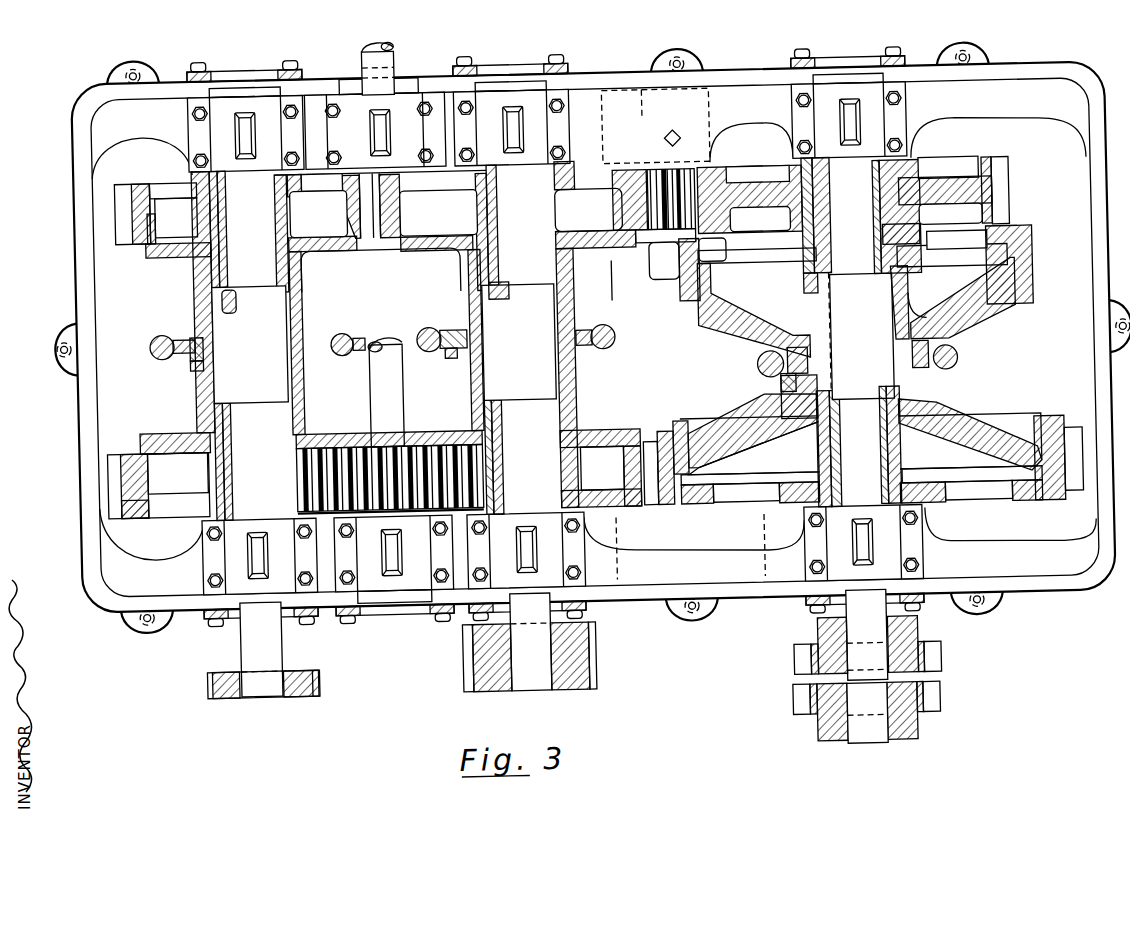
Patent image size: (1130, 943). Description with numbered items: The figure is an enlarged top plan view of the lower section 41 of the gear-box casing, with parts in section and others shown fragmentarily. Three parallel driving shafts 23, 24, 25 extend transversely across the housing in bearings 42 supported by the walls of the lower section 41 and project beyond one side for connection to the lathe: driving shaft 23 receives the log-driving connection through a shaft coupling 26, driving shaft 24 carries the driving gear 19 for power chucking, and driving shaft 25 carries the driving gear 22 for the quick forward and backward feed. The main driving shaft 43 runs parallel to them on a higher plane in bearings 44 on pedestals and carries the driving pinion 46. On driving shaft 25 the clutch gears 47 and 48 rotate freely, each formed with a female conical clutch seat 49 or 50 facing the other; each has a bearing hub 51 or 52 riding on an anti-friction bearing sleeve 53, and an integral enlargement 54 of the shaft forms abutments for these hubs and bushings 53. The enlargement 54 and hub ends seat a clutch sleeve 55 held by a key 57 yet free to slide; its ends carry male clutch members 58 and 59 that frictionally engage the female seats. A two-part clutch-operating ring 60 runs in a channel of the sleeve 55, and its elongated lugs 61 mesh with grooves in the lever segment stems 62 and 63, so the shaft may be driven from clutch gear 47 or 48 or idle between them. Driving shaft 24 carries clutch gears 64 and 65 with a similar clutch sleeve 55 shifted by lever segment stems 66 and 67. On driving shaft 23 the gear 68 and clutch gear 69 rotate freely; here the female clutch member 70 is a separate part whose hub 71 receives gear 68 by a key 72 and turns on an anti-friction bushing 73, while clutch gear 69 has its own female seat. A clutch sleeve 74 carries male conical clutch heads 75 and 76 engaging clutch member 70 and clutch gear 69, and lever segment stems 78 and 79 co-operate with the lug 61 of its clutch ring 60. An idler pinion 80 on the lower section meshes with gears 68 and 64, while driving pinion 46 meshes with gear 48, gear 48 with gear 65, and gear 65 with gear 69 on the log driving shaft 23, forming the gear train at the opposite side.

The driving gear 19 is at (582, 660).
The driving gear 22 is at (310, 681).
The driving shaft 23 is at (867, 634).
The driving shaft 24 is at (531, 642).
The driving shaft 25 is at (238, 651).
The shaft coupling 26 is at (788, 692).
The lower section 41 is at (90, 304).
The bearing 42 is at (556, 337).
The main driving shaft 43 is at (372, 46).
The bearings 44 is at (380, 350).
The driving gear 46 is at (416, 432).
The clutch gear 47 is at (143, 173).
The clutch gear 48 is at (134, 518).
The female conical clutch seat 49 is at (150, 238).
The female conical clutch seat 50 is at (123, 450).
The bearing hub 51 is at (223, 240).
The bearing hub 52 is at (221, 434).
The anti-friction bearing sleeve 53 is at (223, 190).
The integral enlargement 54 is at (553, 342).
The clutch sleeve 55 is at (333, 274).
The key 57 is at (206, 304).
The male clutch member 58 is at (175, 250).
The male clutch member 59 is at (151, 436).
The clutch-operating ring 60 is at (190, 360).
The elongated lugs 61 is at (182, 324).
The lever segment stem 62 is at (150, 338).
The lever segment stem 63 is at (346, 331).
The clutch gear 64 is at (648, 170).
The clutch gear 65 is at (624, 510).
The lever segment stem 66 is at (424, 326).
The lever segment stem 67 is at (614, 342).
The gear 68 is at (1010, 194).
The clutch gear 69 is at (1040, 510).
The female clutch member 70 is at (1032, 271).
The hub 71 is at (916, 188).
The key 72 is at (804, 186).
The anti-friction bushing 73 is at (832, 206).
The clutch sleeve 74 is at (924, 350).
The male conical clutch head 75 is at (718, 322).
The male conical clutch head 76 is at (970, 438).
The lever segment stem 78 is at (756, 368).
The lever segment stem 79 is at (958, 365).
The idler pinion 80 is at (675, 252).